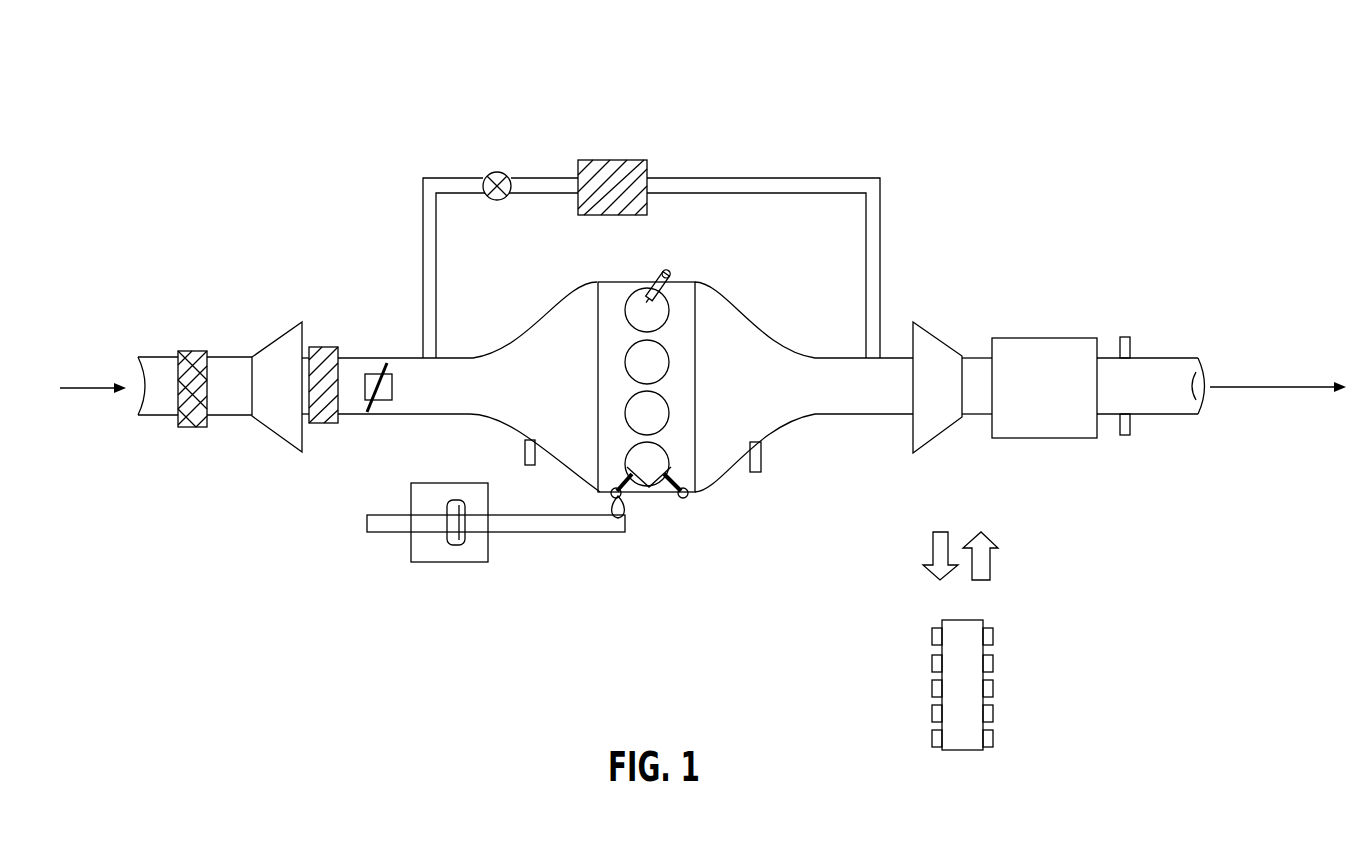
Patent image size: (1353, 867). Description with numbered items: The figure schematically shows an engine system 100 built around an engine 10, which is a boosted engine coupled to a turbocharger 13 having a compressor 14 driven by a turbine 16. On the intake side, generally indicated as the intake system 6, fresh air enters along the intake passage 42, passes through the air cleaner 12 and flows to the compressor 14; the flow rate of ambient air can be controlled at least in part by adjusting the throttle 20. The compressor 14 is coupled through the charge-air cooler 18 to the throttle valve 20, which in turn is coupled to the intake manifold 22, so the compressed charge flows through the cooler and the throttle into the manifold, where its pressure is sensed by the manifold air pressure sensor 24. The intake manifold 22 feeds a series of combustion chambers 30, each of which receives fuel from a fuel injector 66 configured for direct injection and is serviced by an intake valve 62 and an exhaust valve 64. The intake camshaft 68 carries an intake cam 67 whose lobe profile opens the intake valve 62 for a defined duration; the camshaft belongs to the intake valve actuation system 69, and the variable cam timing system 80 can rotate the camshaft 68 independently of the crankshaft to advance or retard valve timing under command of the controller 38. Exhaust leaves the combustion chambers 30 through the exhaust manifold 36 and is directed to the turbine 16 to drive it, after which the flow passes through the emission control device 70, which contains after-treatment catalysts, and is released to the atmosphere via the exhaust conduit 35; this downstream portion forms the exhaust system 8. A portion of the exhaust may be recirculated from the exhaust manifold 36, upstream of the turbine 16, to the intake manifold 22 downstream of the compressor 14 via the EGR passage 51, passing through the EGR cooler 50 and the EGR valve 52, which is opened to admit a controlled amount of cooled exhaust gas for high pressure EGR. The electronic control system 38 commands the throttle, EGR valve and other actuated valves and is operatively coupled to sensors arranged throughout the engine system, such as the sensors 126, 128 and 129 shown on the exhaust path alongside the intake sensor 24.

The engine system 100 is at (1268, 64).
The intake system 6 is at (152, 257).
The exhaust system 8 is at (1236, 254).
The engine 10 is at (695, 368).
The air cleaner 12 is at (193, 350).
The turbocharger 13 is at (292, 301).
The compressor 14 is at (267, 397).
The turbine 16 is at (927, 397).
The charge-air cooler 18 is at (323, 347).
The throttle valve 20 is at (397, 381).
The intake manifold 22 is at (543, 397).
The manifold air pressure (MAP) sensor 24 is at (525, 447).
The combustion chamber 30 is at (668, 298).
The exhaust conduit 35 is at (1175, 358).
The exhaust manifold 36 is at (752, 397).
The electronic control system 38 is at (952, 696).
The intake passage 42 is at (168, 417).
The EGR cooler 50 is at (635, 160).
The EGR passage 51 is at (755, 178).
The EGR valve 52 is at (510, 178).
The intake valve 62 is at (618, 486).
The exhaust valve 64 is at (680, 487).
The fuel injector 66 is at (657, 273).
The intake cam 67 is at (627, 515).
The intake camshaft 68 is at (537, 532).
The intake valve actuation system 69 is at (393, 475).
The emission control device 70 is at (1030, 338).
The variable cam timing (VCT) system 80 is at (425, 483).
The exhaust sensor 126 is at (763, 448).
The exhaust gas sensor 128 is at (1127, 435).
The exhaust gas sensor 129 is at (1127, 337).